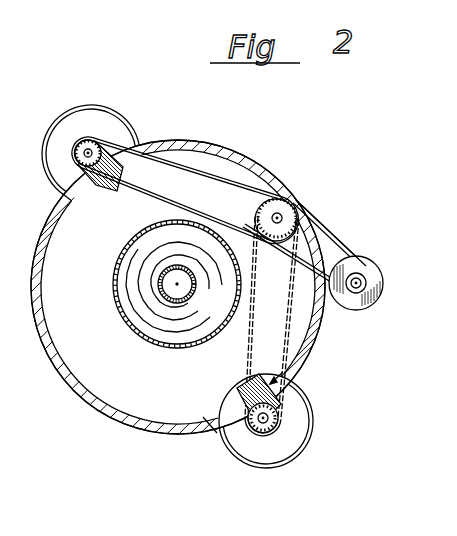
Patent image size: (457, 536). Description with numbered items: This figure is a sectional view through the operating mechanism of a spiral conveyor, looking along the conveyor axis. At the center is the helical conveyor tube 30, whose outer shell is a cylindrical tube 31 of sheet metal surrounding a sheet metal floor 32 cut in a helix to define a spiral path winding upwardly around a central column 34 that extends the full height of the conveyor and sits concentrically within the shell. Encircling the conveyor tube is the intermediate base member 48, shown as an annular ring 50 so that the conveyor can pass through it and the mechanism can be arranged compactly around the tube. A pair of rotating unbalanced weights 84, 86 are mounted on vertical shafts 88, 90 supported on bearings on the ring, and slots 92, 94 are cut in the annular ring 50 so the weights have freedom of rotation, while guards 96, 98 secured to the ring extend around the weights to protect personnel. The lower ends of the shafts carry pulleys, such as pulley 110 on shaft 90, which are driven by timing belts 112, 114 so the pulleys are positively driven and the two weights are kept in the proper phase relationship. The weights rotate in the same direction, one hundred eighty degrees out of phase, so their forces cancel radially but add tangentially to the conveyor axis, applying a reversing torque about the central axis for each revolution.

The helical conveyor tube 30 is at (141, 343).
The cylindrical tube 31 is at (113, 283).
The sheet metal floor 32 is at (188, 334).
The central column 34 is at (168, 299).
The intermediate base member 48 is at (80, 405).
The annular ring 50 is at (216, 142).
The unbalanced weight 84 is at (116, 189).
The unbalanced weight 86 is at (245, 370).
The vertical shaft 88 is at (97, 139).
The vertical shaft 90 is at (270, 418).
The slot 92 is at (62, 194).
The slot 94 is at (215, 423).
The guard 96 is at (74, 108).
The guard 98 is at (268, 468).
The pulley 110 is at (268, 425).
The belt 112 is at (222, 214).
The belt 114 is at (292, 339).